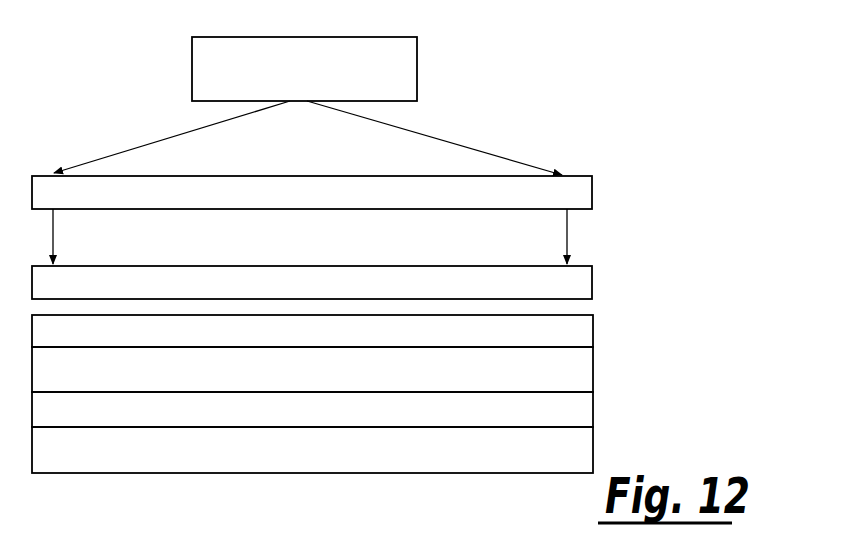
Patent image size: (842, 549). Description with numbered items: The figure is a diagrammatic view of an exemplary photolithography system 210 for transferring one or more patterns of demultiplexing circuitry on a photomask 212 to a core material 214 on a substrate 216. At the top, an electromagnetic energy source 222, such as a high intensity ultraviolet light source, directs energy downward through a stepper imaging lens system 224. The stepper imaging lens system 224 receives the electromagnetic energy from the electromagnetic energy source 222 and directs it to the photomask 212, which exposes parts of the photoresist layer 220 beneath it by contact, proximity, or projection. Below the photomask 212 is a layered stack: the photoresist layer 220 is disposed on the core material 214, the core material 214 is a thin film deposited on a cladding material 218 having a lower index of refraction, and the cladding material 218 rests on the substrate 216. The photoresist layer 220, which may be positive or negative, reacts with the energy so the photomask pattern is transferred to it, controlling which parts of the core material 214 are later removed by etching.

The photolithography system 210 is at (594, 61).
The electromagnetic energy source 222 is at (417, 68).
The stepper imaging lens system 224 is at (592, 190).
The photomask 212 is at (592, 280).
The photoresist layer 220 is at (593, 328).
The core material 214 is at (593, 373).
The cladding material 218 is at (593, 408).
The substrate 216 is at (593, 458).